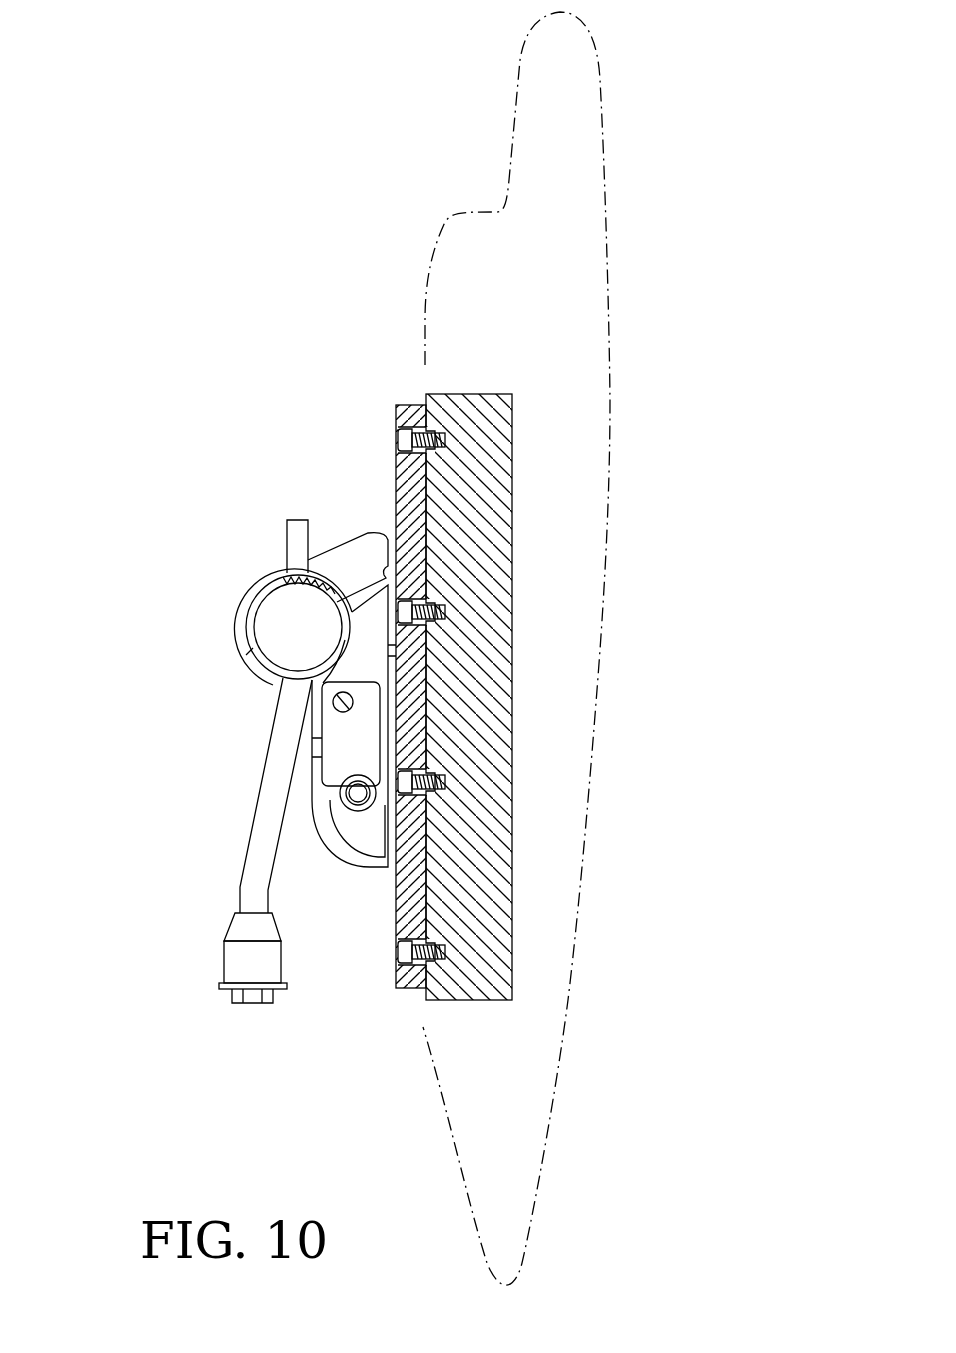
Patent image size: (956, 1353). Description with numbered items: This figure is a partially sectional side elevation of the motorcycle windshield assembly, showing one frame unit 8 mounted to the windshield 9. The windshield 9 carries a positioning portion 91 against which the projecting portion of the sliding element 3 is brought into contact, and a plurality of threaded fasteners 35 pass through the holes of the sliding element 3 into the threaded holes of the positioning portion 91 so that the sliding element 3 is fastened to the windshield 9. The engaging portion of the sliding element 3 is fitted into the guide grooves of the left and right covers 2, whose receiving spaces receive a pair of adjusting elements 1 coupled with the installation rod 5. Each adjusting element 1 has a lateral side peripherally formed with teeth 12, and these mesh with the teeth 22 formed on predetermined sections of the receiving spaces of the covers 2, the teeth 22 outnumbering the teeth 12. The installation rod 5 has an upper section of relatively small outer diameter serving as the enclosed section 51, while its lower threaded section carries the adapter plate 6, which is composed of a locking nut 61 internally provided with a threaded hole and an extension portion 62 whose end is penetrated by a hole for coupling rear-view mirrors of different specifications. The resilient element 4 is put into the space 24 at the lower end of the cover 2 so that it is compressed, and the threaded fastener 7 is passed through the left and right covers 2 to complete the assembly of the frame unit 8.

The windshield 9 is at (580, 240).
The positioning portion 91 is at (478, 438).
The sliding element 3 is at (408, 468).
The threaded fasteners 35 is at (400, 408).
The frame unit 8 is at (153, 788).
The adjusting element 1 is at (275, 627).
The enclosed section 51 is at (296, 538).
The teeth 12 is at (288, 574).
The teeth 22 is at (338, 587).
The cover 2 is at (350, 752).
The space 24 is at (346, 812).
The resilient element 4 is at (362, 812).
The threaded fastener 7 is at (333, 702).
The installation rod 5 is at (270, 822).
The adapter plate 6 is at (176, 969).
The locking nut 61 is at (232, 957).
The extension portion 62 is at (222, 990).